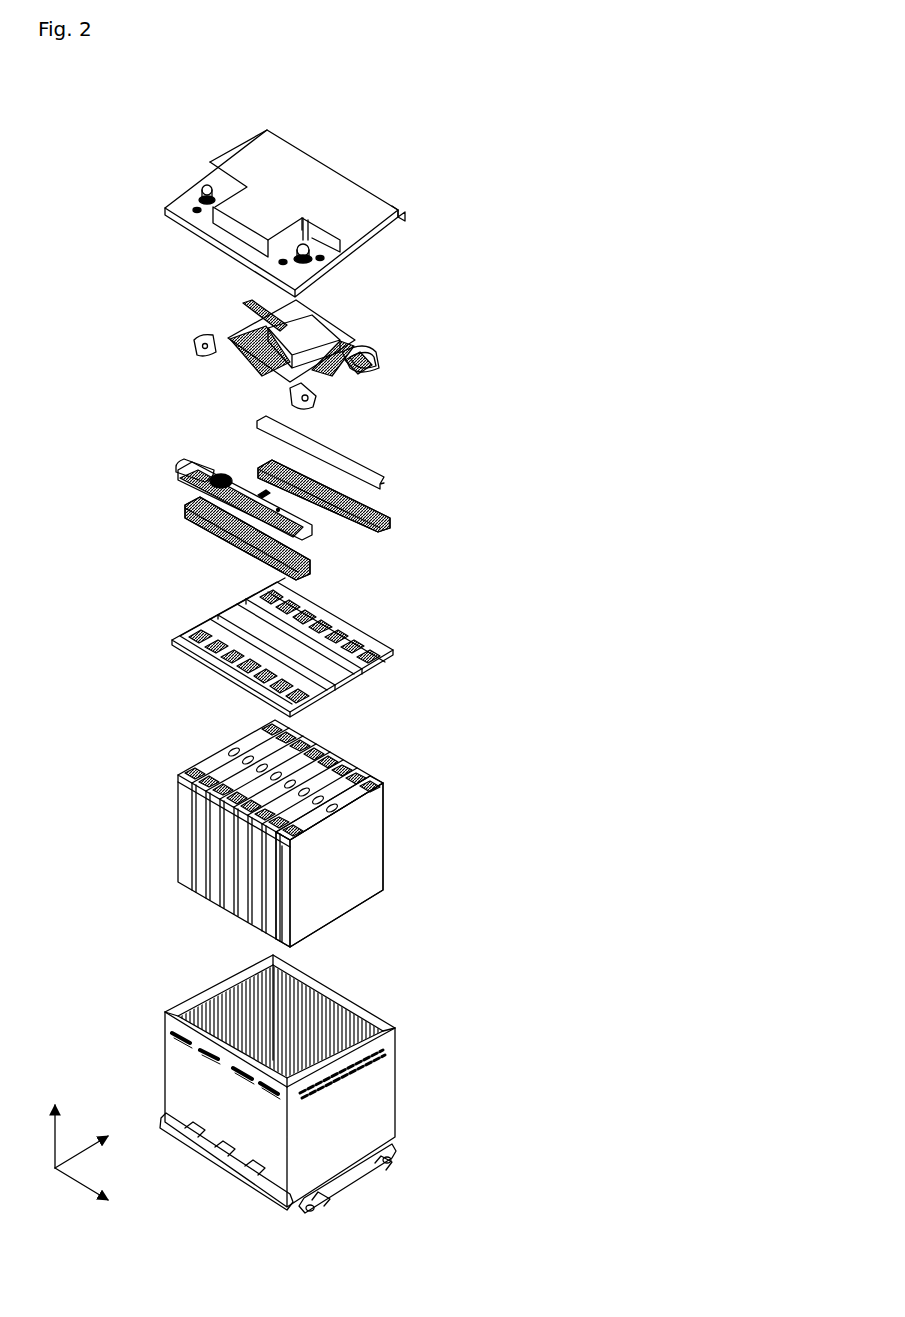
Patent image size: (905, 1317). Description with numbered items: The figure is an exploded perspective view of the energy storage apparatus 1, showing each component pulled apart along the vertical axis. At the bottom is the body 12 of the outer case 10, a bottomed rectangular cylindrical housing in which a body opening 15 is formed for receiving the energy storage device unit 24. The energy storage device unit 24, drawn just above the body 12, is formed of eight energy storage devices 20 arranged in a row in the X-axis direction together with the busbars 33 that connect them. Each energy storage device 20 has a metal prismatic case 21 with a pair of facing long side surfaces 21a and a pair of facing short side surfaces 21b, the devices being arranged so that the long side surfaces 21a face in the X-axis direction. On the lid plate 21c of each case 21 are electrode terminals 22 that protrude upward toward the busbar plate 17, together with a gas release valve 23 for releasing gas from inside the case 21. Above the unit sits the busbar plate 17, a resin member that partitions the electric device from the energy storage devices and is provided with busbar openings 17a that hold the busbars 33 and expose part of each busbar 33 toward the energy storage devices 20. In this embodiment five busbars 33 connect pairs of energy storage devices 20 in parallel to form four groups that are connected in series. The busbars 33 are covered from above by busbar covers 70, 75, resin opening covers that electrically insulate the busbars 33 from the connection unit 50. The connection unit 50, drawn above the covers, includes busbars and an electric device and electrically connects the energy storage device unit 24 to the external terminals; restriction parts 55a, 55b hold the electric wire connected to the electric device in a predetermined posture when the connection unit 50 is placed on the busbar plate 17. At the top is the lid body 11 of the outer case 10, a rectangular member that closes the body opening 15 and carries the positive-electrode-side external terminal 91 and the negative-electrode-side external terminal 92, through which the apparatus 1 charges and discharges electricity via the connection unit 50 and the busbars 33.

The energy storage apparatus 1 is at (420, 122).
The outer case 10 is at (571, 461).
The lid body 11 is at (357, 246).
The body 12 is at (398, 1073).
The body opening 15 is at (191, 982).
The busbar plate 17 is at (372, 633).
The busbar opening 17a is at (187, 626).
The energy storage device 20 is at (182, 885).
The case 21 is at (387, 863).
The long side surface 21a is at (343, 887).
The short side surface 21b is at (277, 910).
The lid plate 21c is at (357, 800).
The electrode terminal 22 is at (377, 775).
The gas release valve 23 is at (232, 756).
The energy storage device unit 24 is at (165, 752).
The busbar 33 is at (260, 565).
The connection unit 50 is at (387, 345).
The restriction part 55a is at (230, 477).
The restriction part 55b is at (277, 499).
The busbar cover 70 is at (367, 462).
The busbar cover 75 is at (191, 462).
The positive-electrode-side external terminal 91 is at (307, 218).
The negative-electrode-side external terminal 92 is at (205, 184).